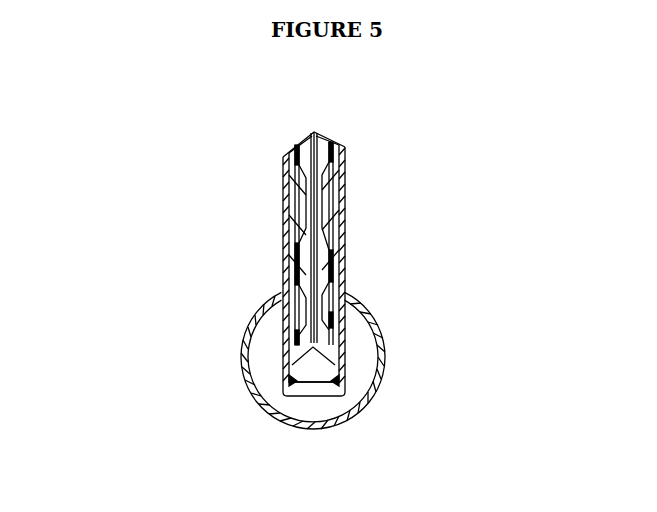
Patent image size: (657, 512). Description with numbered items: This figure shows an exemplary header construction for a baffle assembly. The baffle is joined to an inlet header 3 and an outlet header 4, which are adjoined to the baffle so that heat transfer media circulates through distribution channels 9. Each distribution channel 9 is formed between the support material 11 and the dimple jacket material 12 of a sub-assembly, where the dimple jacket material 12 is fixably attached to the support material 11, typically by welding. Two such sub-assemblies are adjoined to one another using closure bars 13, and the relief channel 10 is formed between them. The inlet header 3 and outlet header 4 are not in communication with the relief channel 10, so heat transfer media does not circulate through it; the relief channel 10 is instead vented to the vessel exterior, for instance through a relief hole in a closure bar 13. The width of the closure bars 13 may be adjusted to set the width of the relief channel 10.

The inlet header 3 is at (252, 400).
The outlet header 4 is at (275, 373).
The distribution channels 9 is at (390, 211).
The relief channel 10 is at (306, 372).
The support material 11 is at (276, 166).
The dimple jacket material 12 is at (293, 343).
The closure bars 13 is at (324, 402).